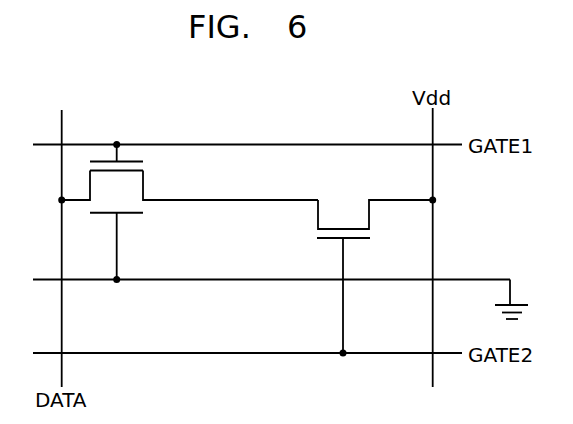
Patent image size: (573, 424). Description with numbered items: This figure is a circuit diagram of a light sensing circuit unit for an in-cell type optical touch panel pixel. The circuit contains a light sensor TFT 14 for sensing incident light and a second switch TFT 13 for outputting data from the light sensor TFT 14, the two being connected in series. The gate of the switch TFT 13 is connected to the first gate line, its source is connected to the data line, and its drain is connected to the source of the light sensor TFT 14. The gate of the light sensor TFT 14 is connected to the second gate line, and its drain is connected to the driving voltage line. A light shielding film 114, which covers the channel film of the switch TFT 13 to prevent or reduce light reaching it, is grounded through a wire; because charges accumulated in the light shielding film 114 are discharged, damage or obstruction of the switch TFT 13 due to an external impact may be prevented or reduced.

The second switch TFT 13 is at (162, 172).
The light sensor TFT 14 is at (300, 233).
The light shielding film 114 is at (123, 214).